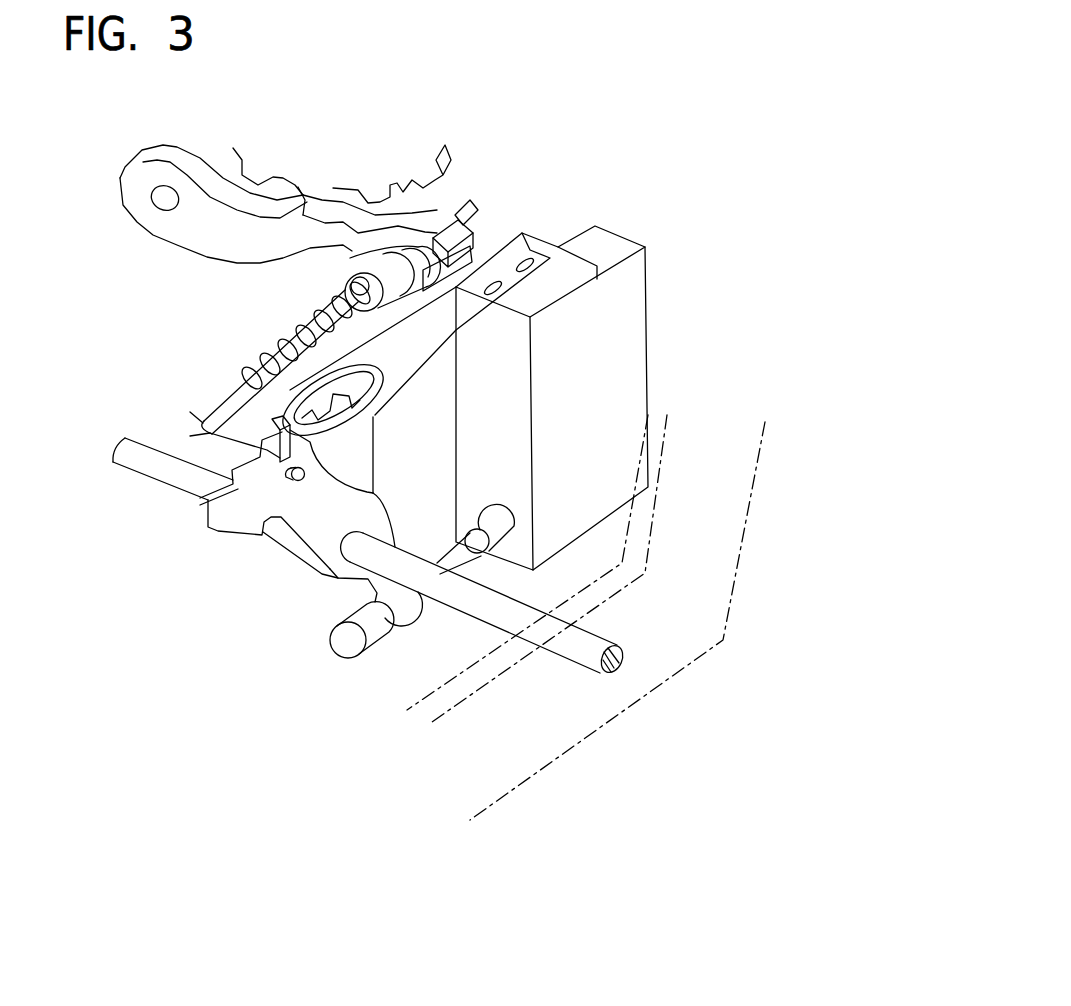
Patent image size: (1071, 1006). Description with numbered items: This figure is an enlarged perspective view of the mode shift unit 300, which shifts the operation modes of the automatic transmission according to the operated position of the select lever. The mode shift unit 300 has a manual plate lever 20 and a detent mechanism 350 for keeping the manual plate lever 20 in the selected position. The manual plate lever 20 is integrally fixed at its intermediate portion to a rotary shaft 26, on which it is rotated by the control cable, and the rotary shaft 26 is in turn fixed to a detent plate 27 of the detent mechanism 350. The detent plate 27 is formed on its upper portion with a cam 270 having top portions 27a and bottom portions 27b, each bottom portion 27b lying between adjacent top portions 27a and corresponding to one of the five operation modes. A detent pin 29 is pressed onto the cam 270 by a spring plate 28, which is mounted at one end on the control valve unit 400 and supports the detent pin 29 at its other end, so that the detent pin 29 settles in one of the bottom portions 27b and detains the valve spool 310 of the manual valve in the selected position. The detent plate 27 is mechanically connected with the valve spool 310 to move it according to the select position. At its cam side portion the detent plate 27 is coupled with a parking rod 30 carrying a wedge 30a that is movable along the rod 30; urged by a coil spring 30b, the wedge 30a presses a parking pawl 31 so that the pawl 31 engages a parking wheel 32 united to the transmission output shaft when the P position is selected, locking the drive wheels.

The manual plate lever 20 is at (703, 660).
The rotary shaft 26 is at (155, 472).
The detent plate 27 is at (240, 520).
The top portions 27a is at (280, 465).
The bottom portions 27b is at (180, 447).
The spring plate 28 is at (397, 373).
The detent pin 29 is at (373, 493).
The parking rod 30 is at (473, 205).
The wedge 30a is at (347, 270).
The coil spring 30b is at (282, 337).
The parking pawl 31 is at (188, 232).
The parking wheel 32 is at (437, 141).
The cam 270 is at (198, 523).
The mode shift unit 300 is at (762, 535).
The valve spool 310 is at (348, 647).
The detent mechanism 350 is at (278, 628).
The control valve unit 400 is at (627, 328).